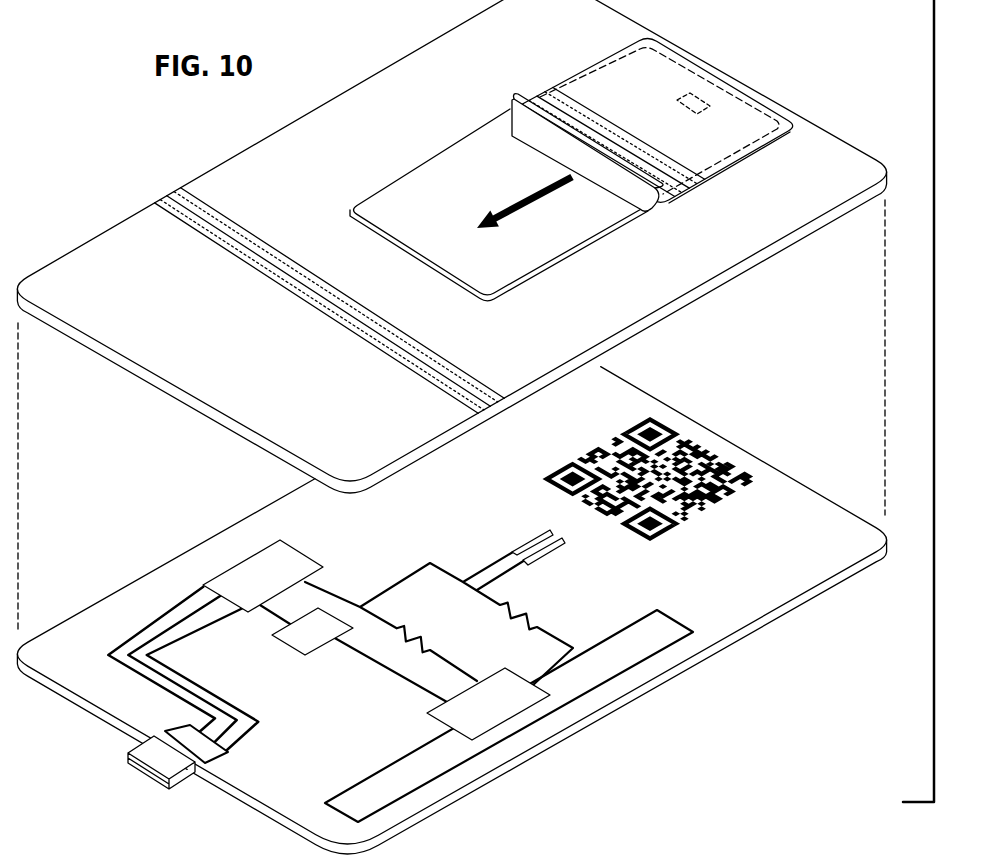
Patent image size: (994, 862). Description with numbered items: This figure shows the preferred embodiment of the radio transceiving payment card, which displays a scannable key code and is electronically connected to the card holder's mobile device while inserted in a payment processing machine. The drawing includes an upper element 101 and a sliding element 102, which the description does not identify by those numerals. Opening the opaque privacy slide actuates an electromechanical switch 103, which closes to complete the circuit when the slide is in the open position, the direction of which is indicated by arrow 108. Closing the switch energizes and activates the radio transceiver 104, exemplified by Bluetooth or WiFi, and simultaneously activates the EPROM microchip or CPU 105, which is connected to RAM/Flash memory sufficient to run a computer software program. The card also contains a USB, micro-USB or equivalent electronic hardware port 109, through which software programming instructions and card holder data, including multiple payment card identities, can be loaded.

The housing / top plate 101 is at (199, 194).
The sliding tray / card 102 is at (670, 67).
The electromechanical switch 103 is at (703, 92).
The radio transceiver 104 is at (441, 708).
The EPROM microchip or CPU 105 is at (290, 561).
The arrow 108 is at (522, 197).
The electronic hardware port 109 is at (147, 778).